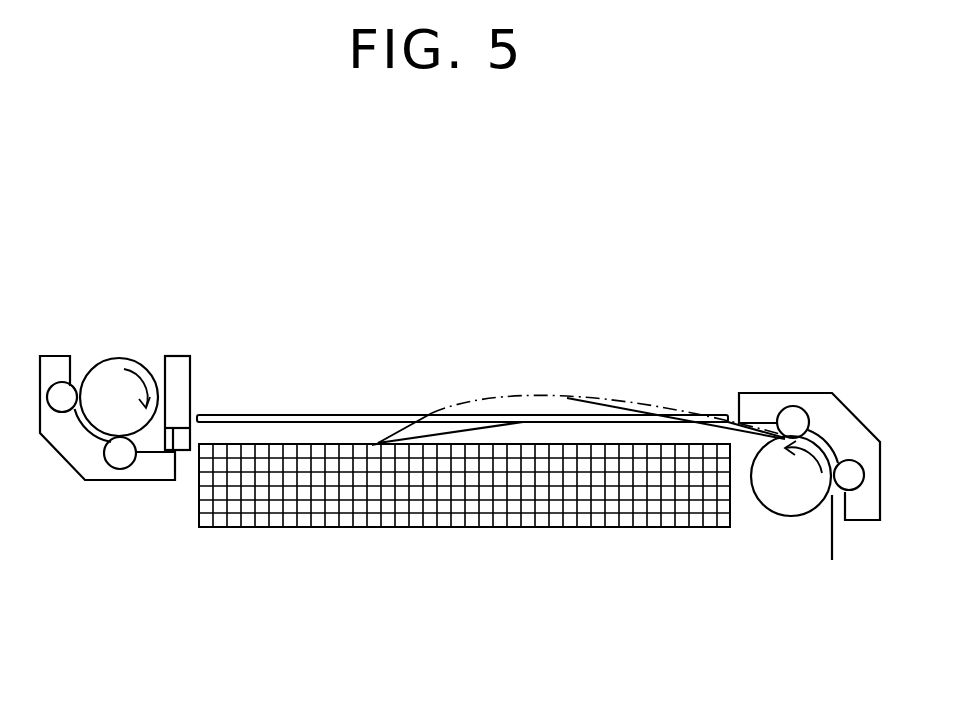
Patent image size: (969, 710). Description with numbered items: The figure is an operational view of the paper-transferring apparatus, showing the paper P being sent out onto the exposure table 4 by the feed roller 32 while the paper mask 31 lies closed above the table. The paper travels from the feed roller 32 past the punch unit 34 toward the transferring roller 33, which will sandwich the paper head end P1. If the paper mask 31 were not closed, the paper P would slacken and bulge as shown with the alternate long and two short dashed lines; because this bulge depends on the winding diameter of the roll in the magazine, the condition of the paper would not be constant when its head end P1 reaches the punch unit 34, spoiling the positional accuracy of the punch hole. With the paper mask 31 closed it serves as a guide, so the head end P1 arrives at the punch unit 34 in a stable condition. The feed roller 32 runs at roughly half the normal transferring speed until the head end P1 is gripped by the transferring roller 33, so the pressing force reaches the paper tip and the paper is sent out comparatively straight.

The exposure table 4 is at (398, 495).
The paper mask 31 is at (388, 417).
The feed roller 32 is at (780, 497).
The transferring roller 33 is at (108, 380).
The punch unit 34 is at (185, 392).
The paper P is at (700, 420).
The paper head end P1 is at (377, 443).